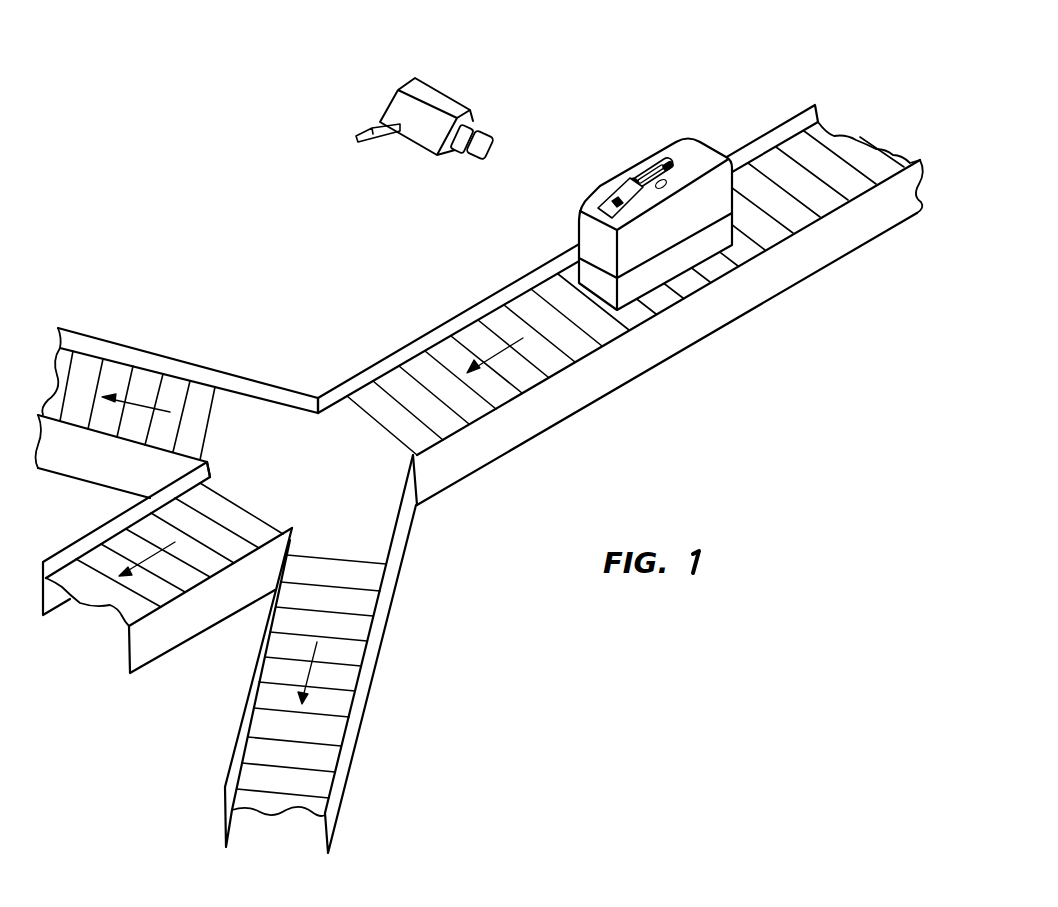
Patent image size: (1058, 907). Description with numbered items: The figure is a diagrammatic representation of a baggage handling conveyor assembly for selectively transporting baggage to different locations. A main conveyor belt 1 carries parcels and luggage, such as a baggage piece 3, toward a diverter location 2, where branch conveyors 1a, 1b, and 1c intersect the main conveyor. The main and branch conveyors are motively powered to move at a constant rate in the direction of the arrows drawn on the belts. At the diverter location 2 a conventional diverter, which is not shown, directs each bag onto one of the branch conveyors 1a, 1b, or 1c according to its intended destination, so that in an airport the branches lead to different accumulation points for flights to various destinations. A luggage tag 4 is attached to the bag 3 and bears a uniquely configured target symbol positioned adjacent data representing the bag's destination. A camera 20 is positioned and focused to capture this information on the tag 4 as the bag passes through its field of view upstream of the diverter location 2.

The main conveyor belt 1 is at (573, 338).
The branch conveyor 1a is at (322, 758).
The branch conveyor 1b is at (112, 605).
The branch conveyor 1c is at (147, 380).
The diverter location 2 is at (332, 479).
The baggage piece 3 is at (678, 224).
The luggage tag 4 is at (621, 196).
The camera 20 is at (433, 97).